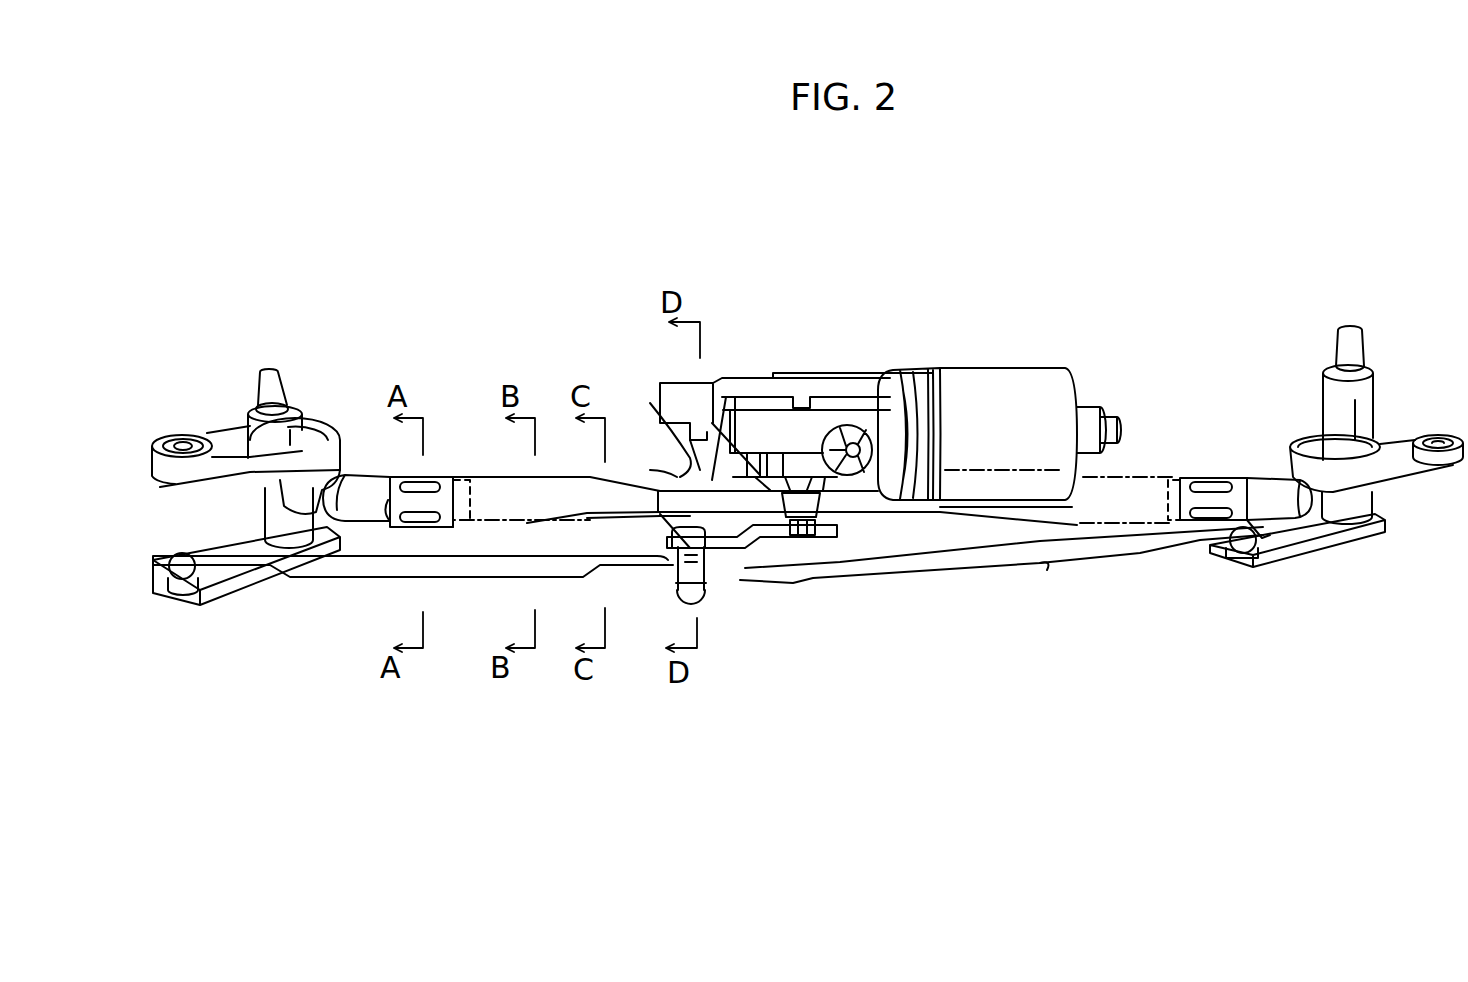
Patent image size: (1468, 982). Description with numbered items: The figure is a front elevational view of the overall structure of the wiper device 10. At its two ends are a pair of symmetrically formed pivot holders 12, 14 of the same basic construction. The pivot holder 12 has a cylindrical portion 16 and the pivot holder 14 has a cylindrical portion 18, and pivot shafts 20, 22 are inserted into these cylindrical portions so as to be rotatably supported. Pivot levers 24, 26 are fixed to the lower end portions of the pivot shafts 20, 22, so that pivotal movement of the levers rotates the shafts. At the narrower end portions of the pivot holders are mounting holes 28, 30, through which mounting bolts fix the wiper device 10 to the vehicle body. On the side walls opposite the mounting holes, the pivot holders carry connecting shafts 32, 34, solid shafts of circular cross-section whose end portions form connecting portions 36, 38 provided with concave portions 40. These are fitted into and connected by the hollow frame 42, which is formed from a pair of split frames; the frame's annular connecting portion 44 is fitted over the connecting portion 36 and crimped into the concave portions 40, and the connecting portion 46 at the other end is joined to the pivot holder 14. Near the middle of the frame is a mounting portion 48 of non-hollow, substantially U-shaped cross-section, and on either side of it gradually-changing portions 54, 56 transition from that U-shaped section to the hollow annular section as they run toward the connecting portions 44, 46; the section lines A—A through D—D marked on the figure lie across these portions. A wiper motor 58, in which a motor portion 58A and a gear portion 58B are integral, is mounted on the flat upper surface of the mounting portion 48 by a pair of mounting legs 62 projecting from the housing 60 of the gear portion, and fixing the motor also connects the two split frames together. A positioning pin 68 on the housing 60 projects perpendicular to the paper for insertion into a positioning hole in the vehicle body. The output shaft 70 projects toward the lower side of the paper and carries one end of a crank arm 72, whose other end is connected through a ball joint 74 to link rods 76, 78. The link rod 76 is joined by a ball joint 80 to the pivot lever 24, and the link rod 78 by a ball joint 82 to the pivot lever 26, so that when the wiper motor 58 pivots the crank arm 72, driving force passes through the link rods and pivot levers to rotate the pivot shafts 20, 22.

The wiper device 10 is at (783, 254).
The pivot holder 12 is at (322, 424).
The pivot holder 14 is at (1292, 440).
The cylindrical portion 16 is at (247, 412).
The cylindrical portion 18 is at (1355, 405).
The pivot shaft 20 is at (266, 372).
The pivot shaft 22 is at (1350, 328).
The pivot lever 24 is at (228, 552).
The pivot lever 26 is at (1312, 562).
The mounting hole 28 is at (184, 436).
The mounting hole 30 is at (1438, 438).
The connecting shaft 32 is at (352, 470).
The connecting shaft 34 is at (1266, 496).
The connecting portion 36 is at (450, 478).
The connecting portion 38 is at (1185, 490).
The concave portions 40 is at (418, 522).
The hollow frame 42 is at (970, 545).
The connecting portion 44 is at (388, 506).
The connecting portion 46 is at (1266, 540).
The mounting portion 48 is at (722, 478).
The gradually-changing portion 54 is at (580, 536).
The gradually-changing portion 56 is at (1087, 545).
The wiper motor 58 is at (978, 275).
The motor portion 58A is at (953, 352).
The gear portion 58B is at (833, 362).
The housing 60 is at (748, 436).
The mounting legs 62 is at (683, 481).
The positioning pin 68 is at (852, 458).
The output shaft 70 is at (806, 538).
The crank arm 72 is at (740, 550).
The ball joint 74 is at (676, 592).
The link rod 76 is at (513, 578).
The link rod 78 is at (1045, 570).
The ball joint 80 is at (183, 553).
The ball joint 82 is at (1243, 555).